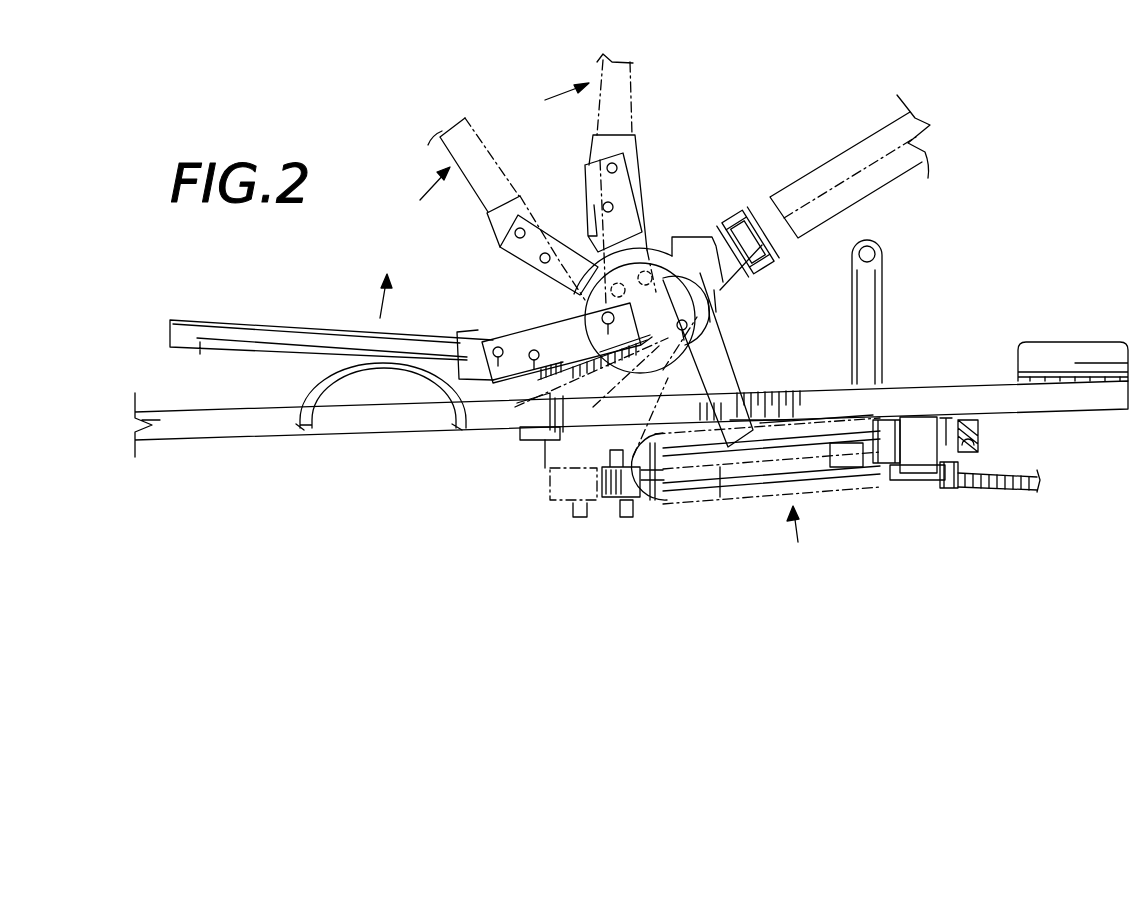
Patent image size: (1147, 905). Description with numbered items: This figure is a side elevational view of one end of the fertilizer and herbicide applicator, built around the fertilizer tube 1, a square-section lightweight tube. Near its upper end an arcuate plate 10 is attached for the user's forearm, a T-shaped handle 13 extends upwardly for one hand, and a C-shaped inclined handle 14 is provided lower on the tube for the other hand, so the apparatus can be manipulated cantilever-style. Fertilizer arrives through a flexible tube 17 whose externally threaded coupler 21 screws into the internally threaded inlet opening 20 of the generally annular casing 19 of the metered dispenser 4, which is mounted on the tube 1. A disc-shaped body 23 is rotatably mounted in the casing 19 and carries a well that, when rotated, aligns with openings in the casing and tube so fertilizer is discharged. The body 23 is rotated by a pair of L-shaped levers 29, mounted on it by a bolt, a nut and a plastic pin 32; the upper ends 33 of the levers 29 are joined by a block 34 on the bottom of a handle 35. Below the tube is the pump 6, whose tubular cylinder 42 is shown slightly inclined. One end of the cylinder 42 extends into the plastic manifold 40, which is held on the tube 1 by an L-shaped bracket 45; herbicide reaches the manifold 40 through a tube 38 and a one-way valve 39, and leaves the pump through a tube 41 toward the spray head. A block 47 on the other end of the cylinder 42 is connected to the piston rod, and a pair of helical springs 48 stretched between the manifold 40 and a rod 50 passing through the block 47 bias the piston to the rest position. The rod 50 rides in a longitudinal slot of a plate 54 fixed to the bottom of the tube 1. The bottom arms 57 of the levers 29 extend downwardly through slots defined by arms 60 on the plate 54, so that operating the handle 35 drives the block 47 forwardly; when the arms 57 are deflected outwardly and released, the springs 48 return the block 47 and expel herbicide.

The fertilizer tube 1 is at (153, 433).
The metered dispenser 4 is at (595, 260).
The pump 6 is at (803, 543).
The arcuate plate 10 is at (1052, 355).
The T-shaped handle 13 is at (862, 300).
The C-shaped inclined handle 14 is at (330, 392).
The flexible tube 17 is at (807, 172).
The annular casing 19 is at (650, 262).
The inlet opening 20 is at (690, 253).
The coupler 21 is at (766, 272).
The disc-shaped body 23 is at (718, 313).
The L-shaped levers 29 is at (558, 342).
The plastic pin 32 is at (742, 350).
The upper ends of the levers 33 is at (473, 330).
The block 34 is at (468, 368).
The handle 35 is at (218, 336).
The tube 38 is at (1003, 490).
The one-way valve 39 is at (945, 490).
The manifold 40 is at (918, 450).
The tube 41 is at (978, 436).
The tubular cylinder 42 is at (718, 470).
The L-shaped bracket 45 is at (946, 418).
The block 47 is at (612, 500).
The helical springs 48 is at (653, 493).
The rod 50 is at (626, 518).
The plate 54 is at (523, 437).
The bottom arms of the levers 57 is at (728, 393).
The arms 60 is at (810, 427).